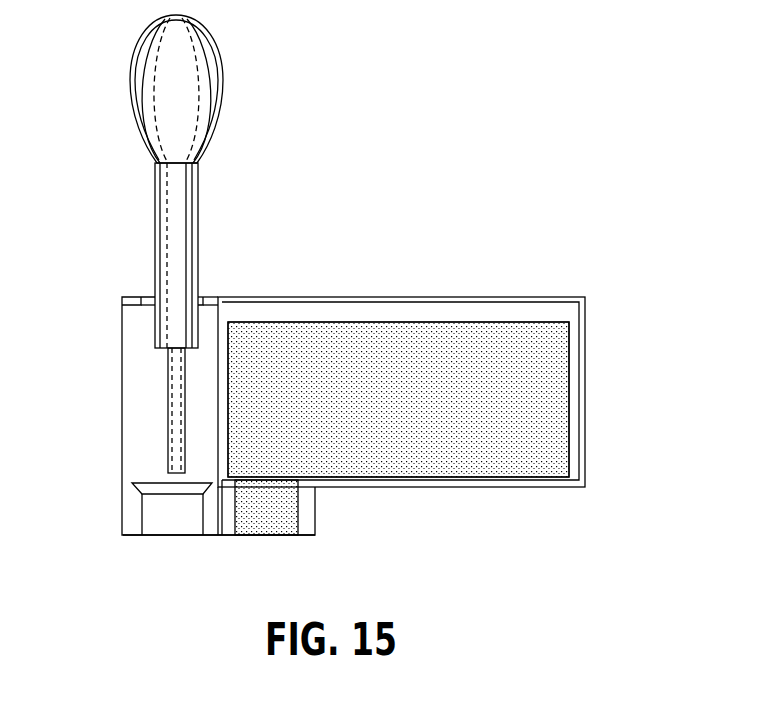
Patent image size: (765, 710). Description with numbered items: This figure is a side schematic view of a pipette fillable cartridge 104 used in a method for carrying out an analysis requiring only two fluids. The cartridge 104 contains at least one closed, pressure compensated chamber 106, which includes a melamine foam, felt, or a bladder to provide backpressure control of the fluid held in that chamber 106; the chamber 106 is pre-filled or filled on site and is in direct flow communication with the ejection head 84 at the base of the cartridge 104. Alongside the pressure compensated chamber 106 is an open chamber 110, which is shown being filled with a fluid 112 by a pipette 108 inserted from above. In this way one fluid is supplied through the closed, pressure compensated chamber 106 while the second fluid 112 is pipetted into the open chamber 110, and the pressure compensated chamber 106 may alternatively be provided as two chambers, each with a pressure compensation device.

The ejection head 84 is at (213, 538).
The cartridge 104 is at (540, 238).
The pressure compensated chamber 106 is at (433, 292).
The pipette 108 is at (135, 105).
The open chamber 110 is at (140, 345).
The fluid 112 is at (162, 245).